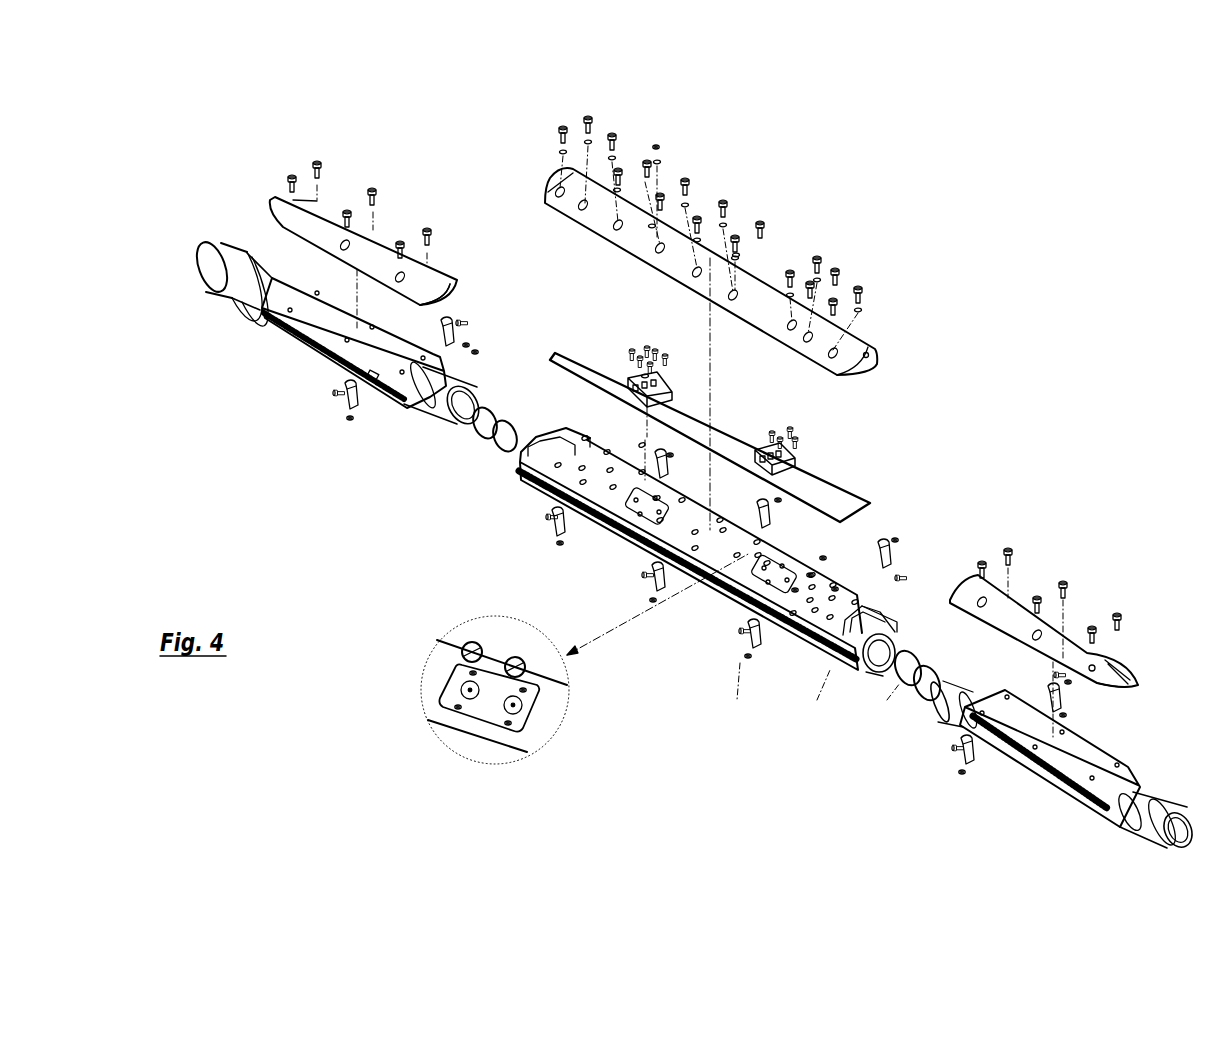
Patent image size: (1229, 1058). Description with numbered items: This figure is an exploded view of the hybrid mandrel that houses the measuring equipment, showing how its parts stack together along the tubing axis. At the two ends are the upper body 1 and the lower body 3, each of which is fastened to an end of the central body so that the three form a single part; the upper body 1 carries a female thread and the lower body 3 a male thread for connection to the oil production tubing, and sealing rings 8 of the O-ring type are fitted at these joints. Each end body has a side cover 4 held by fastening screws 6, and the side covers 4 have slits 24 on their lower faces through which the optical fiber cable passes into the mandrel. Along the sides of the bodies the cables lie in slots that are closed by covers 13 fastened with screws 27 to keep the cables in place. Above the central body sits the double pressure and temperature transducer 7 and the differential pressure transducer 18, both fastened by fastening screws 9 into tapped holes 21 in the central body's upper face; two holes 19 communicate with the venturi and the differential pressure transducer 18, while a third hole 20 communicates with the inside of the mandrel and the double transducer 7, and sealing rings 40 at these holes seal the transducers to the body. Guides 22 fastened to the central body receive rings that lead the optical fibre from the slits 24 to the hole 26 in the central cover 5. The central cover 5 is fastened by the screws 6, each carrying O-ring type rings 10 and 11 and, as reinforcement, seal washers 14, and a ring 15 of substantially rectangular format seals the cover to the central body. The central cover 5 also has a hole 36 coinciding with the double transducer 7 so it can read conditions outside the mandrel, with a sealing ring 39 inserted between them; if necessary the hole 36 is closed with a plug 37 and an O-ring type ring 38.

The upper body 1 is at (212, 278).
The lower body 3 is at (1150, 830).
The side covers 4 is at (312, 212).
The central cover 5 is at (868, 338).
The screws 6 is at (375, 187).
The double pressure and temperature transducer 7 is at (665, 395).
The sealing rings 8 is at (492, 446).
The fastening screws 9 is at (642, 340).
The O-ring type ring 10 is at (862, 596).
The O-ring type ring 11 is at (838, 586).
The covers 13 is at (345, 400).
The seal washers 14 is at (739, 253).
The ring 15 is at (862, 490).
The differential pressure transducer 18 is at (806, 458).
The holes 19 is at (513, 716).
The third hole 20 is at (645, 504).
The tapped holes 21 is at (667, 543).
The guides 22 is at (520, 478).
The slits 24 is at (440, 296).
The hole 26 is at (867, 362).
The screws 27 is at (333, 393).
The hole 36 is at (652, 226).
The plug 37 is at (658, 145).
The O-ring type ring 38 is at (660, 161).
The sealing ring 39 is at (650, 377).
The sealing rings 40 is at (508, 668).